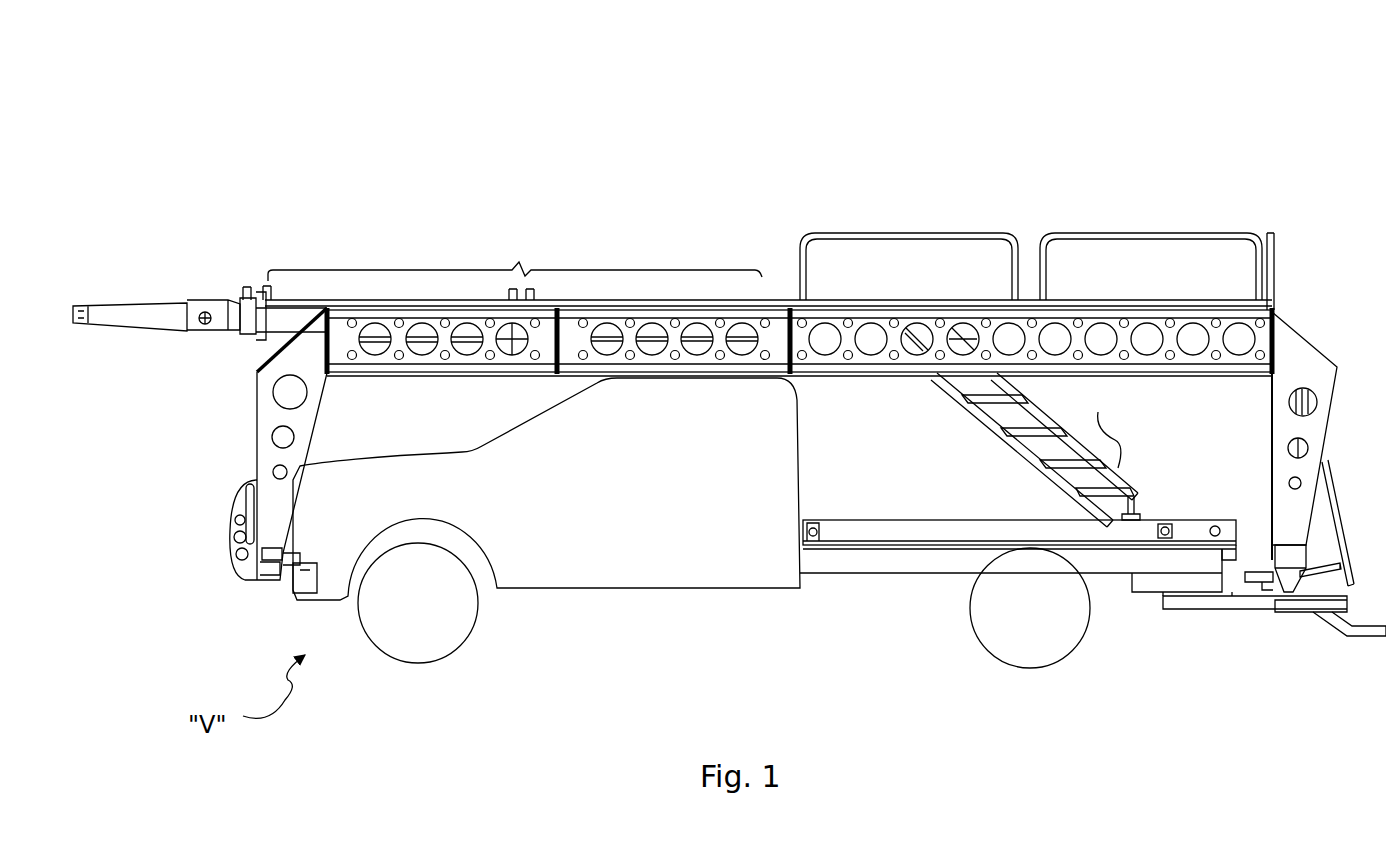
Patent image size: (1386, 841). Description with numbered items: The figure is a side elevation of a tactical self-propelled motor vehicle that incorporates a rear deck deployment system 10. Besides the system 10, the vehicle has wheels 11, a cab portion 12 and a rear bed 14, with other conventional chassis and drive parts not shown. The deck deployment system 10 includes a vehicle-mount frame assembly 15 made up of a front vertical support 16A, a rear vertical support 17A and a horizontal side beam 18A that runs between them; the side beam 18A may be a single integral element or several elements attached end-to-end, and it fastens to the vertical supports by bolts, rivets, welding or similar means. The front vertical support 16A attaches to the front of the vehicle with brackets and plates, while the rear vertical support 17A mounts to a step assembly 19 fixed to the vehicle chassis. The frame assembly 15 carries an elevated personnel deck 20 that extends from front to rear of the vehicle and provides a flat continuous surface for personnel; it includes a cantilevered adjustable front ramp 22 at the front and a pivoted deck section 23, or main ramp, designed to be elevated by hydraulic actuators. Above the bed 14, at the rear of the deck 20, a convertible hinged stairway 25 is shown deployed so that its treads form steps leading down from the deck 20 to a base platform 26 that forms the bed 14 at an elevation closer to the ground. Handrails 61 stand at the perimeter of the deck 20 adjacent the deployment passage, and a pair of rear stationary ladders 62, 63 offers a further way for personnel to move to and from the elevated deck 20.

The deck deployment system 10 is at (275, 158).
The wheels 11 is at (444, 638).
The cab portion 12 is at (648, 484).
The rear bed 14 is at (888, 520).
The vehicle-mount frame assembly 15 is at (240, 420).
The front vertical support 16A is at (262, 456).
The rear vertical support 17A is at (1304, 360).
The horizontal side beam 18A is at (525, 376).
The step assembly 19 is at (1308, 622).
The elevated personnel deck 20 is at (1290, 266).
The cantilevered adjustable front ramp 22 is at (158, 300).
The pivoted deck section 23 is at (519, 268).
The convertible hinged stairway 25 is at (1120, 456).
The base platform 26 is at (960, 533).
The handrails 61 is at (1058, 232).
The rear stationary ladder 62 is at (1332, 508).
The rear stationary ladder 63 is at (1318, 560).